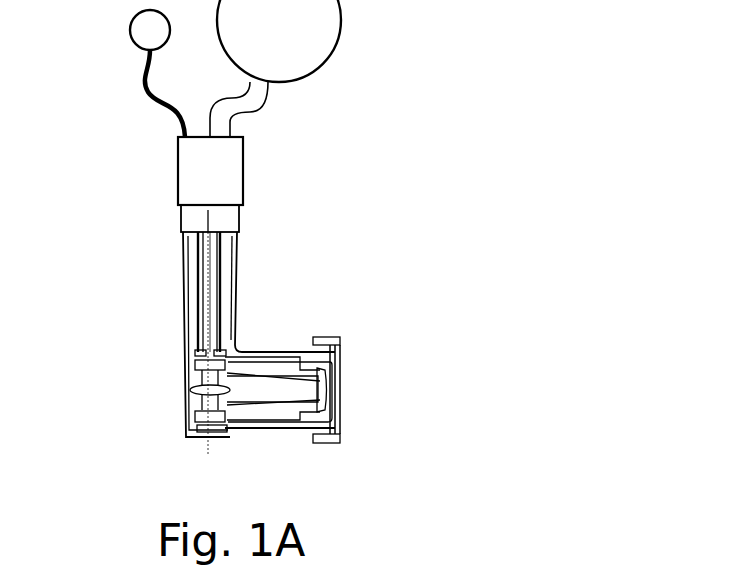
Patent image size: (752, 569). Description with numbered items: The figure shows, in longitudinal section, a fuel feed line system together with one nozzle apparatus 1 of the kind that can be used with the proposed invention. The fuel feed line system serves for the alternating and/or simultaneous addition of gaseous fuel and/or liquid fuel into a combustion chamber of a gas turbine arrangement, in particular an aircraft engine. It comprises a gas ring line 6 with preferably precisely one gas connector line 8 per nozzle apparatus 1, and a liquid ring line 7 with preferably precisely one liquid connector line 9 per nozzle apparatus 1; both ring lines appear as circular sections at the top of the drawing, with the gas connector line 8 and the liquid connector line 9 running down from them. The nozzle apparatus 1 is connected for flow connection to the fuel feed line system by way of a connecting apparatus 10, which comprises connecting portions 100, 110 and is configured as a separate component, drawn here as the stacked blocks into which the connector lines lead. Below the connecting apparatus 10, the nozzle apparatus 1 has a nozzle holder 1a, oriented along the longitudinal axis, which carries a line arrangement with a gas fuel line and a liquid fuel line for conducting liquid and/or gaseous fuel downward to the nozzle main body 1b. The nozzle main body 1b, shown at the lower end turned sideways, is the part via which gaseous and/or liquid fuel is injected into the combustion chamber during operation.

The nozzle apparatus 1 is at (187, 268).
The nozzle holder 1a is at (187, 317).
The nozzle main body 1b is at (247, 437).
The gas ring line 6 is at (330, 25).
The liquid ring line 7 is at (130, 28).
The gas connector line 8 is at (262, 92).
The liquid connector line 9 is at (142, 70).
The connecting apparatus 10 is at (217, 321).
The connecting portion 100 is at (245, 168).
The connecting portion 110 is at (243, 218).